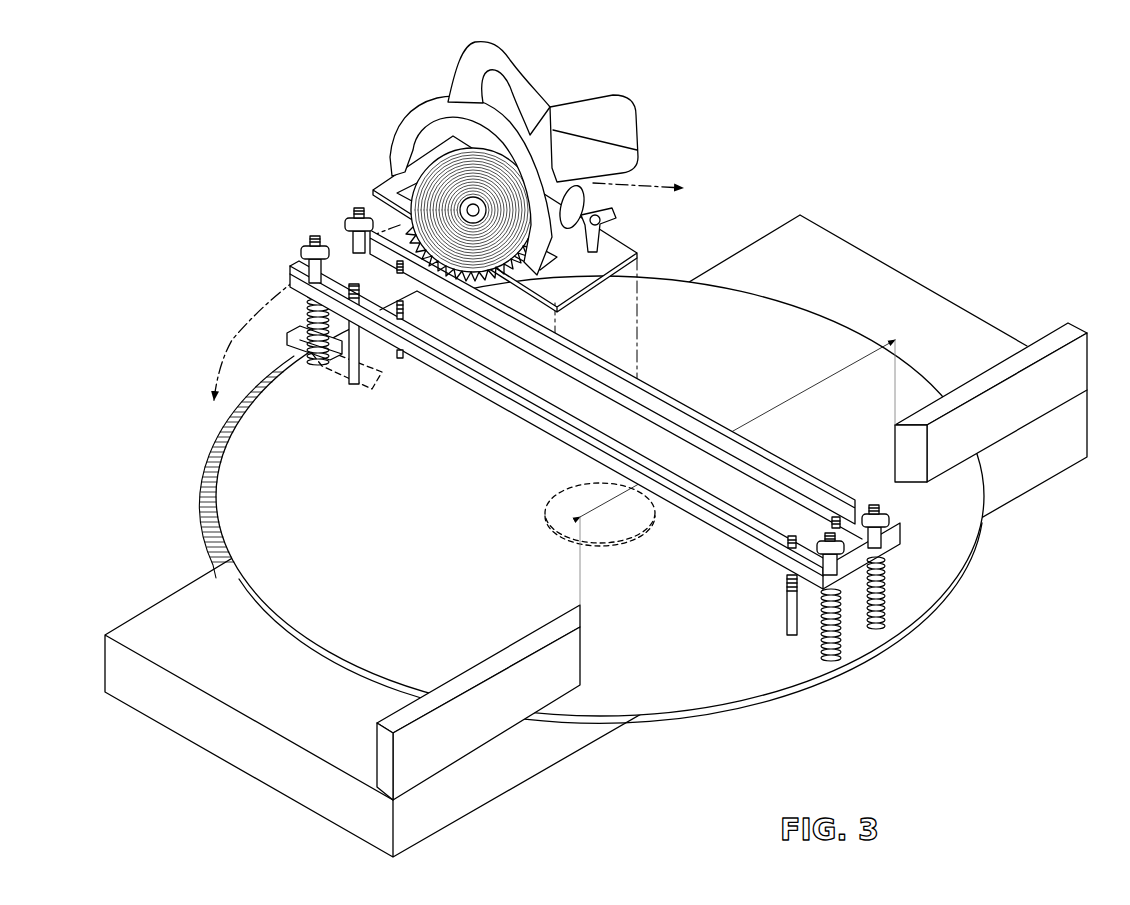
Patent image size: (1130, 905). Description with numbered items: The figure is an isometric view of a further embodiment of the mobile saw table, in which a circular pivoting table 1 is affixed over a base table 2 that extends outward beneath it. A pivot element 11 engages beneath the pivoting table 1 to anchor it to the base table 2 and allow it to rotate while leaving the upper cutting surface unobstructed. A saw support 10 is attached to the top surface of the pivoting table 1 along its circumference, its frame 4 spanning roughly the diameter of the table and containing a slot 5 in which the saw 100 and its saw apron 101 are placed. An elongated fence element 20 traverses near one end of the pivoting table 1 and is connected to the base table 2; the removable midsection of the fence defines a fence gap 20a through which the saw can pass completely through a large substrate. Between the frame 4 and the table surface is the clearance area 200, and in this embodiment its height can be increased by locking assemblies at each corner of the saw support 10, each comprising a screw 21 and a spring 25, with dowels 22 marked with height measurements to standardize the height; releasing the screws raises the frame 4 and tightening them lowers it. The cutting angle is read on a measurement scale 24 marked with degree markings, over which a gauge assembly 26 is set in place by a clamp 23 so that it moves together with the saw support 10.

The pivoting table 1 is at (450, 506).
The base table 2 is at (190, 630).
The frame 4 is at (780, 480).
The slot 5 is at (556, 376).
The saw support 10 is at (624, 365).
The pivot element 11 is at (562, 543).
The fence element 20 is at (385, 750).
The fence gap 20a is at (860, 361).
The screw 21 is at (352, 216).
The dowel 22 is at (358, 385).
The clamp 23 is at (287, 358).
The measurement scale 24 is at (215, 492).
The spring 25 is at (310, 318).
The gauge assembly 26 is at (297, 337).
The saw 100 is at (595, 86).
The saw apron 101 is at (620, 255).
The clearance area 200 is at (495, 440).